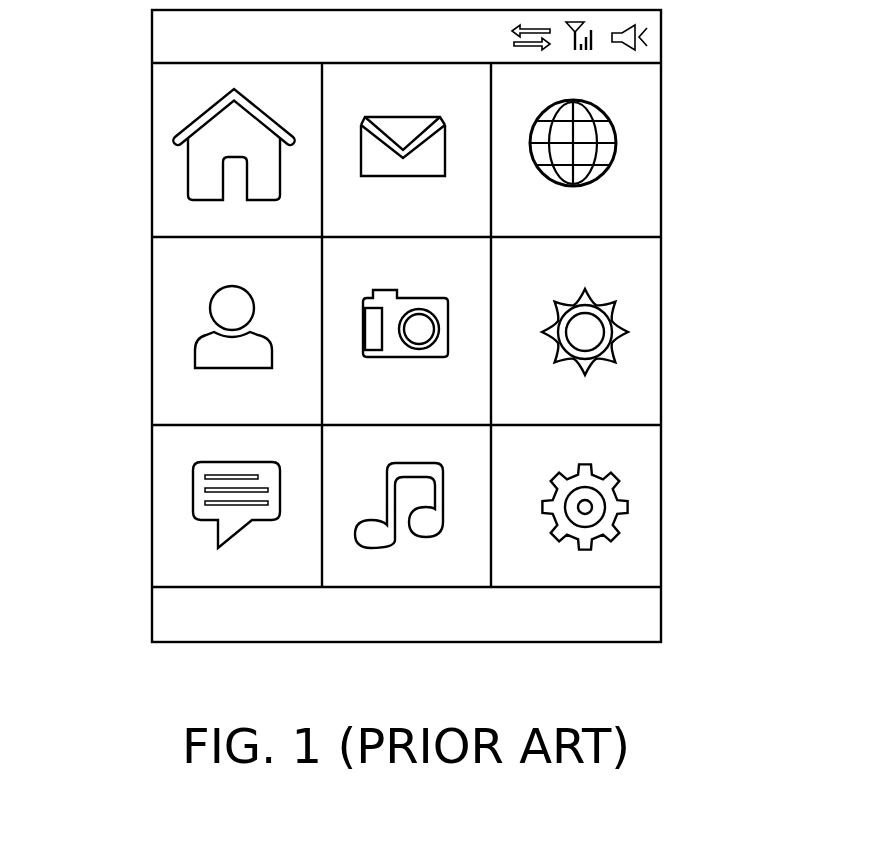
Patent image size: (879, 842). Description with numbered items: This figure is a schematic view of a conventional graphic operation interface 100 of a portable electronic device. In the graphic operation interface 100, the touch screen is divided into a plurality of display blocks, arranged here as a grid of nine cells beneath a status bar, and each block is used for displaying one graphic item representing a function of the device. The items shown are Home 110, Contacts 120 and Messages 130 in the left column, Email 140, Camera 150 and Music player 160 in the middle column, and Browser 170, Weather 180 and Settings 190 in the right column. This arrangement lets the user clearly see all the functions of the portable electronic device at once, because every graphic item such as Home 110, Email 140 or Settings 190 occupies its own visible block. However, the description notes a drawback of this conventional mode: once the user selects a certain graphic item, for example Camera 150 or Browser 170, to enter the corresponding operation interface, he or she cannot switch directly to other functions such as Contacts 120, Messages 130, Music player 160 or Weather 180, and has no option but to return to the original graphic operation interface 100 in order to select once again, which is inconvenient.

The graphic operation interface 100 is at (661, 517).
The Home 110 is at (167, 185).
The Contacts 120 is at (172, 387).
The Messages 130 is at (172, 565).
The Email 140 is at (467, 93).
The Camera 150 is at (467, 268).
The Music player 160 is at (467, 456).
The Browser 170 is at (643, 133).
The Weather 180 is at (643, 380).
The Settings 190 is at (643, 558).